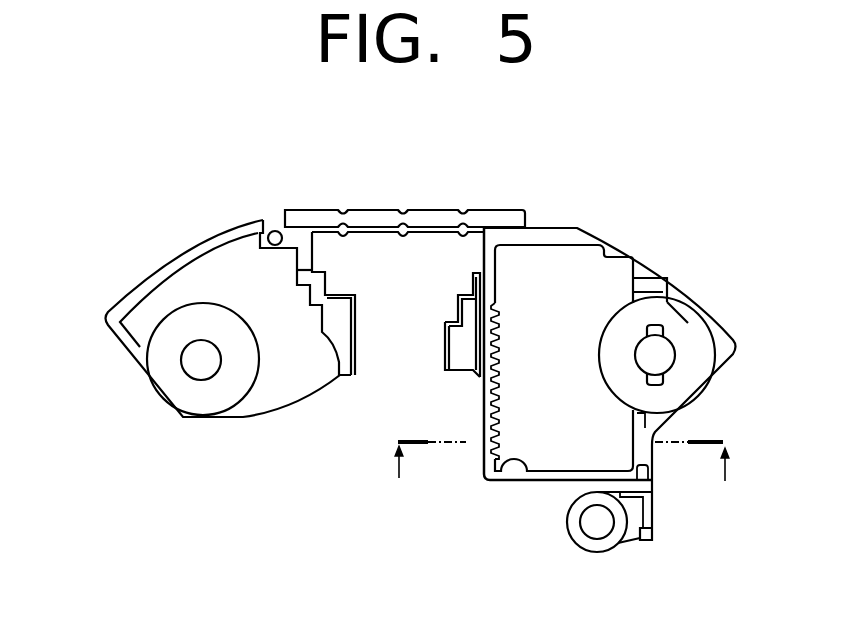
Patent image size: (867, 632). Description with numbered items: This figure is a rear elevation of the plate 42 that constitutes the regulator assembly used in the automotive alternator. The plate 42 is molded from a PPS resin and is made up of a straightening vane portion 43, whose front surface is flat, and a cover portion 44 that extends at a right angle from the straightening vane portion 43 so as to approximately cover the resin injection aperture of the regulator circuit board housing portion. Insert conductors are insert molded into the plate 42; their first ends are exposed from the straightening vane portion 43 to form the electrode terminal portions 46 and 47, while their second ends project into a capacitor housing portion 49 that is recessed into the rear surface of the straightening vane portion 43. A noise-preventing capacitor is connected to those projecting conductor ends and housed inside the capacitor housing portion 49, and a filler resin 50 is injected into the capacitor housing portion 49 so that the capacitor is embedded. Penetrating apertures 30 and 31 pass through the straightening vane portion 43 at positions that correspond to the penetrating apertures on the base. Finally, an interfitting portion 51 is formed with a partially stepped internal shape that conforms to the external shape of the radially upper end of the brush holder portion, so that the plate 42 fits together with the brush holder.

The plate 42 is at (96, 141).
The penetrating aperture 30 is at (200, 368).
The penetrating aperture 31 is at (658, 352).
The straightening vane portion 43 is at (613, 246).
The cover portion 44 is at (492, 208).
The electrode terminal portion 46 is at (577, 528).
The electrode terminal portion 47 is at (680, 322).
The capacitor housing portion 49 is at (485, 480).
The filler resin 50 is at (583, 413).
The interfitting portion 51 is at (448, 307).